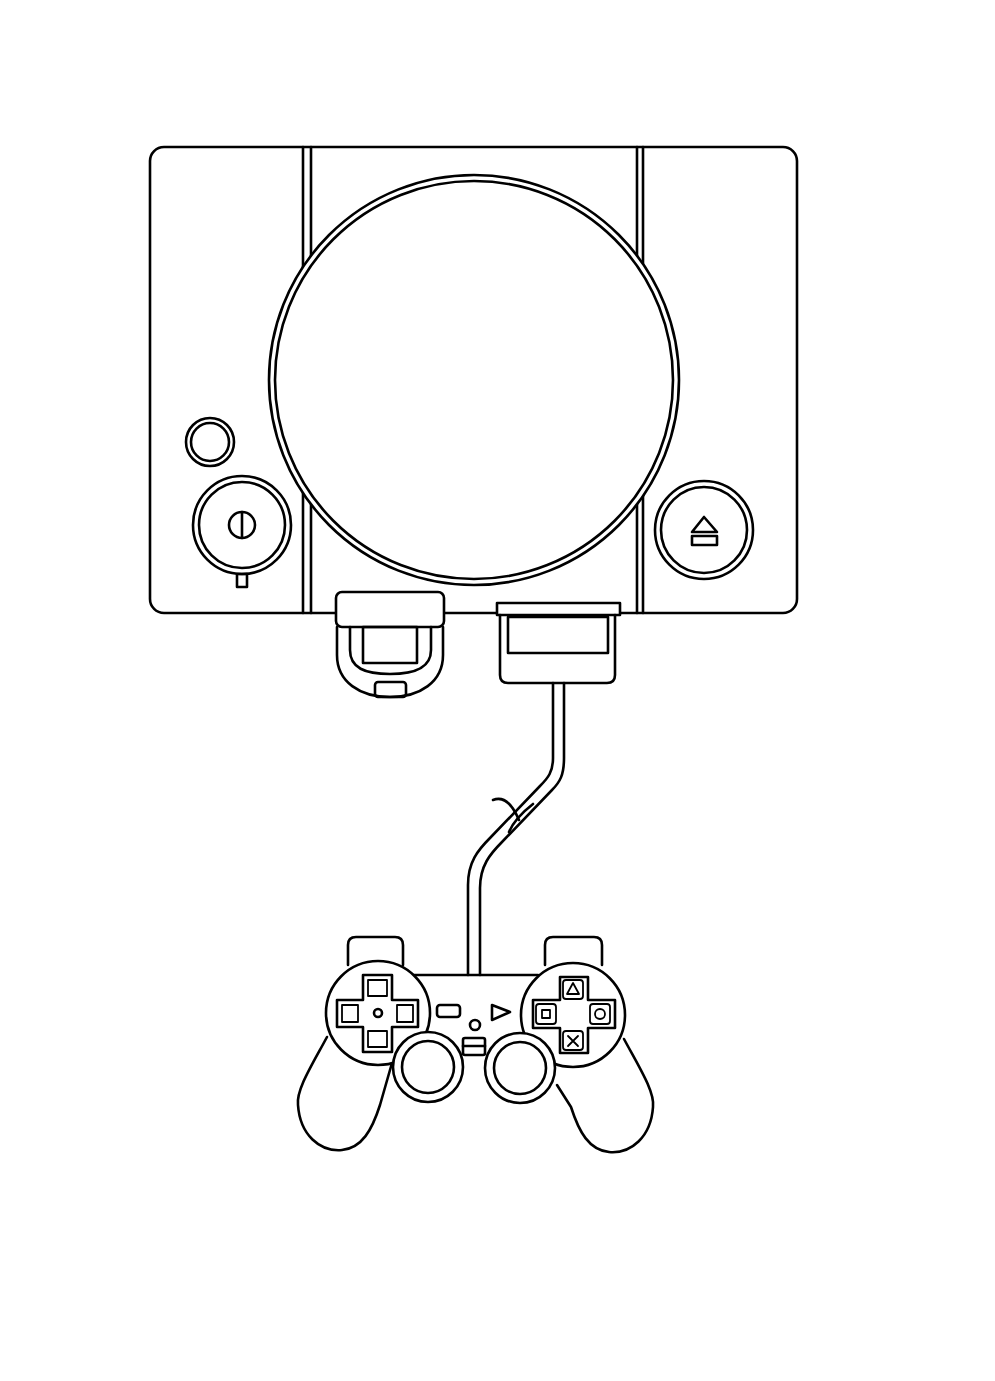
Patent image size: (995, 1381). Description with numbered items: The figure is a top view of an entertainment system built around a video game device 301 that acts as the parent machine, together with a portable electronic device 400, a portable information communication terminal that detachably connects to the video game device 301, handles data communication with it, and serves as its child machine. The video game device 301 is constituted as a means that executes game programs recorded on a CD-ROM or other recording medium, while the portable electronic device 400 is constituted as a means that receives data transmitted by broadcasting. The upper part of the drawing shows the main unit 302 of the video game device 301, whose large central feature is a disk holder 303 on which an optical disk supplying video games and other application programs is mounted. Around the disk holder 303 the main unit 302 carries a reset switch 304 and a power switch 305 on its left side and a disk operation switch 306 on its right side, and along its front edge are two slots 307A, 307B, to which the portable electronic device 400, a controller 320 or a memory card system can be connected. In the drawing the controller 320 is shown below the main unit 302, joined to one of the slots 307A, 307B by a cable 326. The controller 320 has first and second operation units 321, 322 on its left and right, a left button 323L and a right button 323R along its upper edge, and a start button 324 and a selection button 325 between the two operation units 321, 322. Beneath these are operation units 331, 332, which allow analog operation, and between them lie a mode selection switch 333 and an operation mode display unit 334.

The video game device 301 is at (687, 122).
The main unit 302 is at (773, 618).
The disk holder 303 is at (510, 207).
The reset switch 304 is at (203, 443).
The power switch 305 is at (207, 523).
The disk operation switch 306 is at (732, 522).
The slot 307A is at (335, 614).
The slot 307B is at (620, 618).
The controller cable 326 is at (597, 683).
The portable electronic device 400 is at (310, 710).
The controller 320 is at (668, 1039).
The first operation unit 321 is at (348, 988).
The second operation unit 322 is at (600, 988).
The left button 323L is at (348, 915).
The right button 323R is at (599, 915).
The start button 324 is at (500, 1003).
The selection button 325 is at (455, 1002).
The operation unit 331 is at (386, 1152).
The operation unit 332 is at (560, 1141).
The mode selection switch 333 is at (467, 1100).
The operation mode display unit 334 is at (472, 1045).